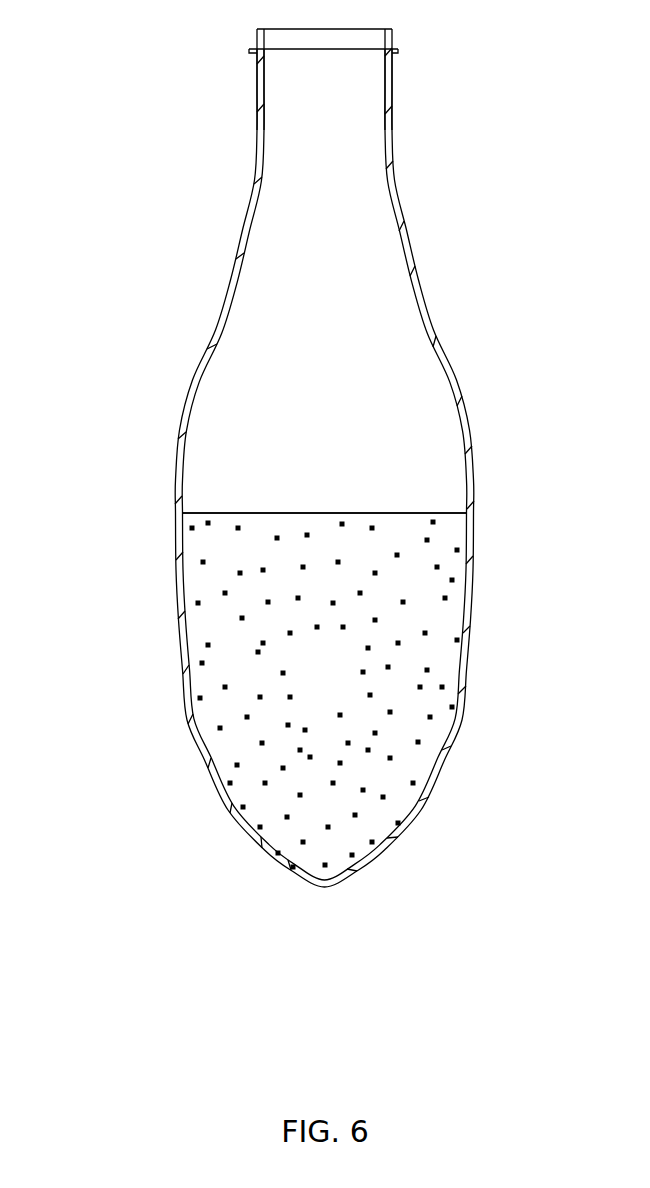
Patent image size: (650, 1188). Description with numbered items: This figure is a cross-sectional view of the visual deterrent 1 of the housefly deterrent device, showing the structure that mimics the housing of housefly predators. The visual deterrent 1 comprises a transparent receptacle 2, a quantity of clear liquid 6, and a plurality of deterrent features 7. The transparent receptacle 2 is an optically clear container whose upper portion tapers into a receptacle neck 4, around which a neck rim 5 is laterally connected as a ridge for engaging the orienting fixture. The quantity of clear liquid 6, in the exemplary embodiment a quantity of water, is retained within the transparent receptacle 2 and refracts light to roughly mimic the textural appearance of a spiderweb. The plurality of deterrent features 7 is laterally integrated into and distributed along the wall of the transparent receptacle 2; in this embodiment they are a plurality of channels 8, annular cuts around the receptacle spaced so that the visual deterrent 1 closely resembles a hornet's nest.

The visual deterrent 1 is at (158, 869).
The transparent receptacle 2 is at (314, 331).
The receptacle neck 4 is at (265, 117).
The neck rim 5 is at (398, 52).
The quantity of clear liquid 6 is at (314, 688).
The plurality of deterrent features 7 is at (133, 467).
The plurality of channels 8 is at (195, 380).